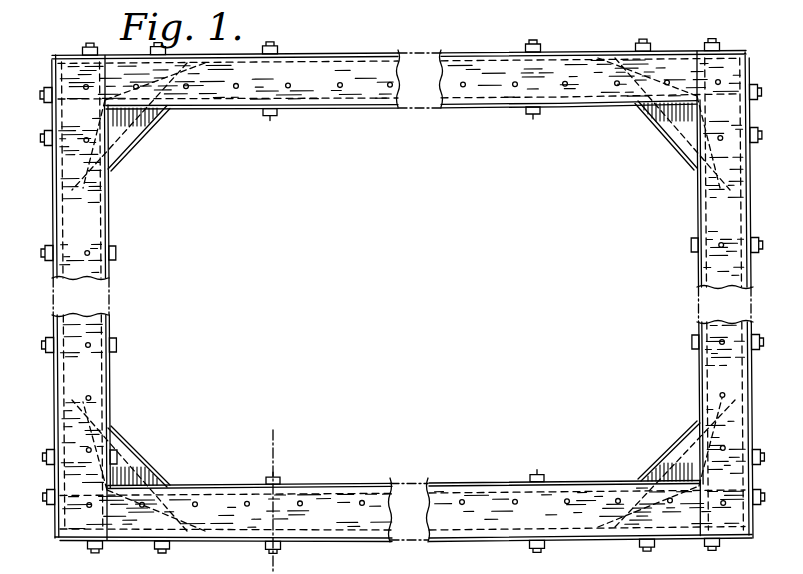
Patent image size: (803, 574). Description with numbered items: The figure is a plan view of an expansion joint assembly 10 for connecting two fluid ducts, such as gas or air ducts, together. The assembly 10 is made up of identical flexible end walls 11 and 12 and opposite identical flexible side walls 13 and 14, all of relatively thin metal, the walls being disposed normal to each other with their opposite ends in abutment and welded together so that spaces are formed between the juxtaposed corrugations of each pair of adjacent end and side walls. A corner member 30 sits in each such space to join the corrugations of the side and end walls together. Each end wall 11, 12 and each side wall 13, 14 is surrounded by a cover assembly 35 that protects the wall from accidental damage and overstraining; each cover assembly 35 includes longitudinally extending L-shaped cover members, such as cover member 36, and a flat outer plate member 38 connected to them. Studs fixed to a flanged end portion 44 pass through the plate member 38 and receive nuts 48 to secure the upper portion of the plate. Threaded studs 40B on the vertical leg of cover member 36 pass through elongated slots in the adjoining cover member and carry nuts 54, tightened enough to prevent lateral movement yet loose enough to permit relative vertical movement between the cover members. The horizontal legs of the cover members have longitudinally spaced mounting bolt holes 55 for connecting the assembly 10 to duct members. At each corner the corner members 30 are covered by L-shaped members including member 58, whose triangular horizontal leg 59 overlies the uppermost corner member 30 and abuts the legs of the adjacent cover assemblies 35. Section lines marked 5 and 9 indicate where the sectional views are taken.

The expansion joint assembly 10 is at (464, 44).
The flexible end wall 11 is at (112, 372).
The flexible end wall 12 is at (694, 366).
The flexible side wall 13 is at (390, 108).
The flexible side wall 14 is at (374, 483).
The corner member 30 is at (79, 165).
The cover assembly 35 is at (348, 52).
The cover member 36 is at (300, 72).
The flat outer plate member 38 is at (444, 53).
The threaded stud 40B is at (270, 116).
The nut 48 is at (50, 350).
The nut 54 is at (117, 255).
The mounting bolt hole 55 is at (85, 448).
The L-shaped member 58 is at (127, 157).
The horizontal leg 59 is at (134, 135).
The section line 5- 5 is at (277, 437).
The section line 9- 9 is at (28, 562).
The flanged end portion 44 is at (450, 568).